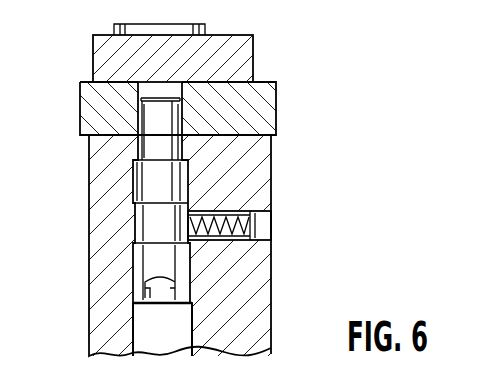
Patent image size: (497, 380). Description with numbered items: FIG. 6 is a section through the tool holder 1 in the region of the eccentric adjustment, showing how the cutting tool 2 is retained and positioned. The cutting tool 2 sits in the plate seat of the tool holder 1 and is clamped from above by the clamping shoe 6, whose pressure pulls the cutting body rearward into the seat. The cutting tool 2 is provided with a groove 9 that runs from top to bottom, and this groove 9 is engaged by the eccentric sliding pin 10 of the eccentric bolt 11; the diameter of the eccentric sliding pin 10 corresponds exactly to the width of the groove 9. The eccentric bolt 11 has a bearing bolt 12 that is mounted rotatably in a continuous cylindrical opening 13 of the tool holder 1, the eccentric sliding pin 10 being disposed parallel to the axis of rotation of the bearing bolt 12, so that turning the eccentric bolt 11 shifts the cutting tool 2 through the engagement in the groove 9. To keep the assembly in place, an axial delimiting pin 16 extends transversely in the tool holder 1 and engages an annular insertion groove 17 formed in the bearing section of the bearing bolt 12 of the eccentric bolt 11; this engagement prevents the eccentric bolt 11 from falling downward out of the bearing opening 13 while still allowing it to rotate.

The tool holder 1 is at (253, 188).
The cutting tool 2 is at (265, 110).
The clamping shoe 6 is at (245, 59).
The groove 9 is at (150, 88).
The eccentric sliding pin 10 is at (147, 122).
The bearing bolt 12 is at (135, 172).
The annular insertion groove 17 is at (133, 218).
The eccentric bolt 11 is at (145, 266).
The cylindrical opening 13 is at (133, 318).
The axial delimiting pin 16 is at (235, 250).